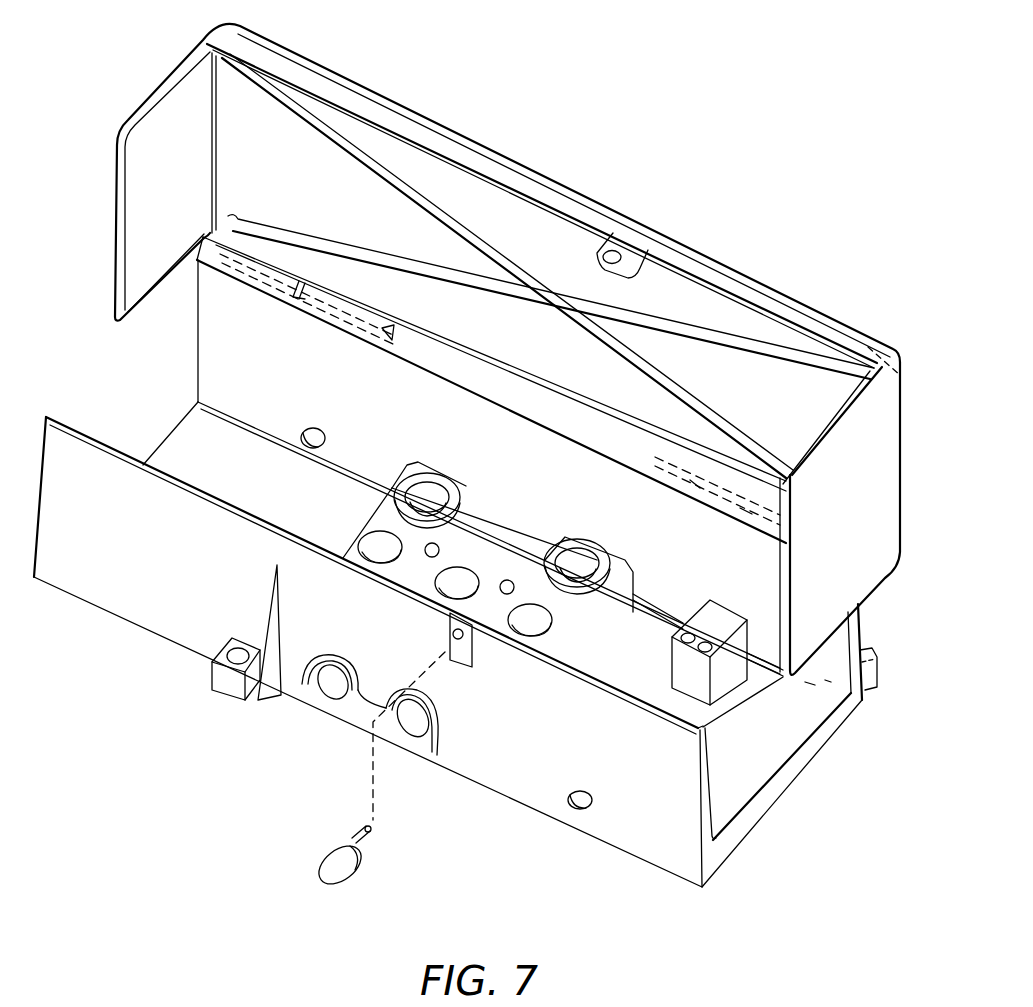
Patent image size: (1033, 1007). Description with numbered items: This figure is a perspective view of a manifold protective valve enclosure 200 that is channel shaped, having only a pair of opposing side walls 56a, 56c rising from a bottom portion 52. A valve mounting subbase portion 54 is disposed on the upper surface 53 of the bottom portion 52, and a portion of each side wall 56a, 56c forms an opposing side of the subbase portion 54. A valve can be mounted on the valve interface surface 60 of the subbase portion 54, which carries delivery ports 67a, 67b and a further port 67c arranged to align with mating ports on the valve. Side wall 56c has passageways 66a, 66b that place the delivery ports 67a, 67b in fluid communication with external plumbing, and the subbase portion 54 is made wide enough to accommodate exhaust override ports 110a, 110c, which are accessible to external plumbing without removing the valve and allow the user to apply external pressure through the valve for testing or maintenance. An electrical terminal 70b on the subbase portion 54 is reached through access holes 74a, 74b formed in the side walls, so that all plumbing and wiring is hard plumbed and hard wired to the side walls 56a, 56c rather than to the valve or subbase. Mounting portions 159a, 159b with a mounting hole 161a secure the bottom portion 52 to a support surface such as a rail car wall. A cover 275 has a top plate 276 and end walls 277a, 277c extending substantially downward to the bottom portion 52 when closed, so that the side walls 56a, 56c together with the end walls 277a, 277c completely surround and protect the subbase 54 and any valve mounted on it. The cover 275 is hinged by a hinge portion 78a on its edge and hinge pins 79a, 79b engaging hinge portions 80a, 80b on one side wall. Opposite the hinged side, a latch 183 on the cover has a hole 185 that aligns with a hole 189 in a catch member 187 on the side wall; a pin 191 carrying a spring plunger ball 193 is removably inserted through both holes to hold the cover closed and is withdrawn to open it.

The bottom portion 52 is at (760, 818).
The upper surface 53 is at (182, 452).
The valve mounting subbase portion 54 is at (632, 603).
The side wall 56a is at (230, 337).
The side wall 56c is at (83, 523).
The valve interface surface 60 is at (383, 520).
The passageway 66a is at (334, 688).
The passageway 66b is at (413, 722).
The delivery port 67a is at (365, 547).
The delivery port 67b is at (462, 577).
The hole 67c is at (547, 613).
The electrical terminal 70b is at (712, 622).
The access hole 74a is at (303, 440).
The access hole 74b is at (574, 805).
The hinge portion 78a is at (243, 258).
The hinge pin 79a is at (313, 298).
The hinge pin 79b is at (747, 510).
The hinge portion 80a is at (366, 320).
The hinge portion 80b is at (697, 484).
The exhaust override port 110a is at (440, 478).
The exhaust override port 110c is at (580, 548).
The mounting portion 159a is at (232, 688).
The mounting portion 159b is at (875, 672).
The mounting hole 161a is at (236, 656).
The latch 183 is at (619, 252).
The hole 185 is at (605, 254).
The catch member 187 is at (468, 652).
The hole 189 is at (453, 636).
The pin 191 is at (342, 868).
The spring plunger ball 193 is at (370, 840).
The manifold protective valve enclosure 200 is at (605, 132).
The cover 275 is at (902, 345).
The top plate 276 is at (340, 172).
The end wall 277a is at (148, 147).
The end wall 277c is at (858, 563).